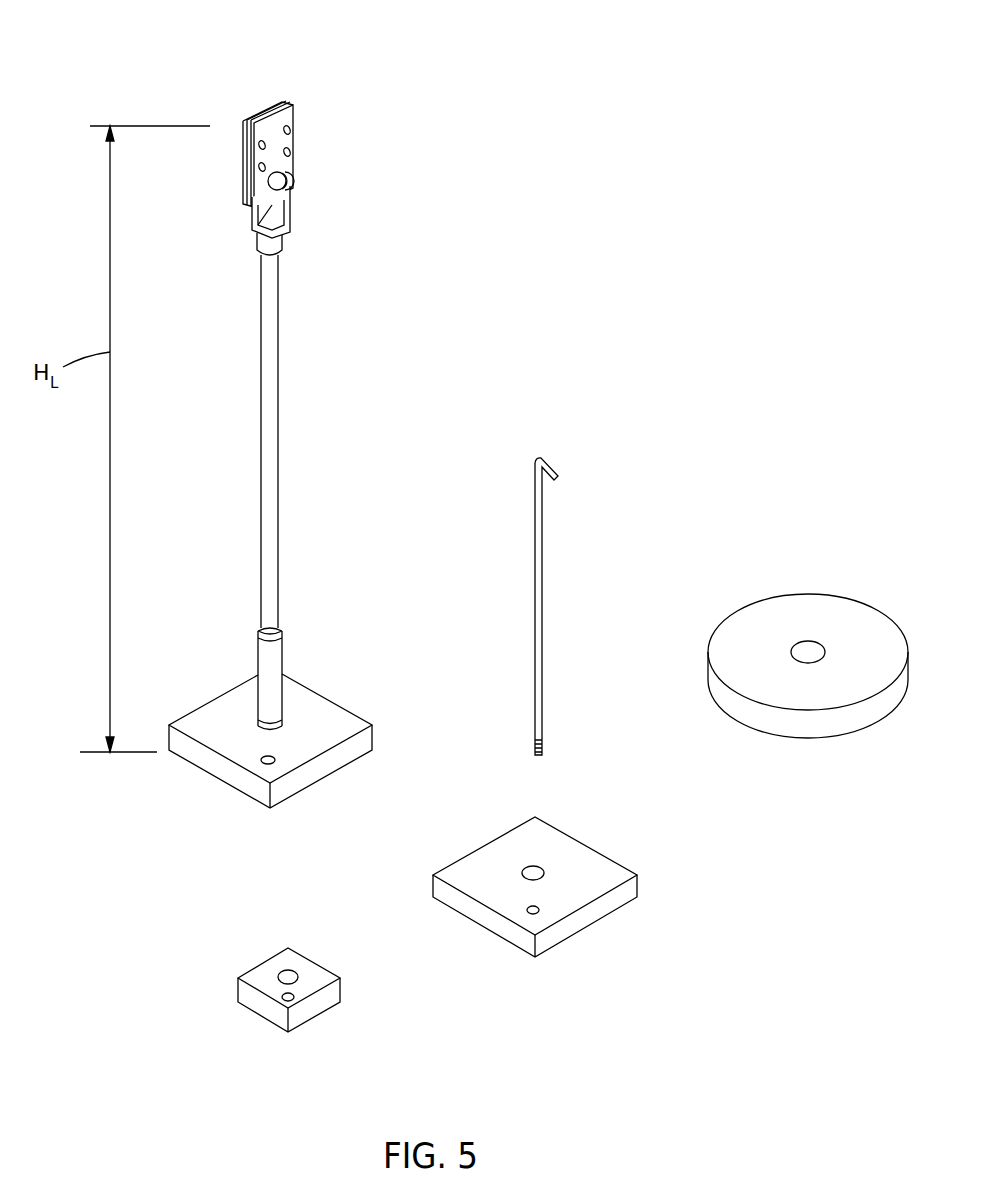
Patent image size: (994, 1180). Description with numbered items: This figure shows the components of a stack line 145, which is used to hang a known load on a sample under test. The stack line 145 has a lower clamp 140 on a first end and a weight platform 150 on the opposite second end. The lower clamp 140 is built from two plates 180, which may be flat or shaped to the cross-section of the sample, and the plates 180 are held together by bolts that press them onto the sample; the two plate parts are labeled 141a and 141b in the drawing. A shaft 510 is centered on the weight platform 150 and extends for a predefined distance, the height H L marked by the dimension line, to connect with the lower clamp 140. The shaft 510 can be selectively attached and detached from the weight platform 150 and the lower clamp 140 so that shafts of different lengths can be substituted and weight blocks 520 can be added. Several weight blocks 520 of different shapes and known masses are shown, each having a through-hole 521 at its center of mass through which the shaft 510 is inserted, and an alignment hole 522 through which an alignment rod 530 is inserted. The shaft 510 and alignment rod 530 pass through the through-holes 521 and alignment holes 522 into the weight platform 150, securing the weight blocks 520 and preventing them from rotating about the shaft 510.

The stack line 145 is at (767, 55).
The shaft 510 is at (268, 477).
The front bracket plate 141a is at (293, 118).
The rear bracket plate 141b is at (243, 132).
The plates 180 is at (284, 106).
The lower clamp 140 is at (288, 165).
The weight platform 150 is at (213, 702).
The alignment rod 530 is at (535, 495).
The weight block 520 is at (808, 603).
The through-hole 521 is at (805, 647).
The alignment hole 522 is at (263, 762).